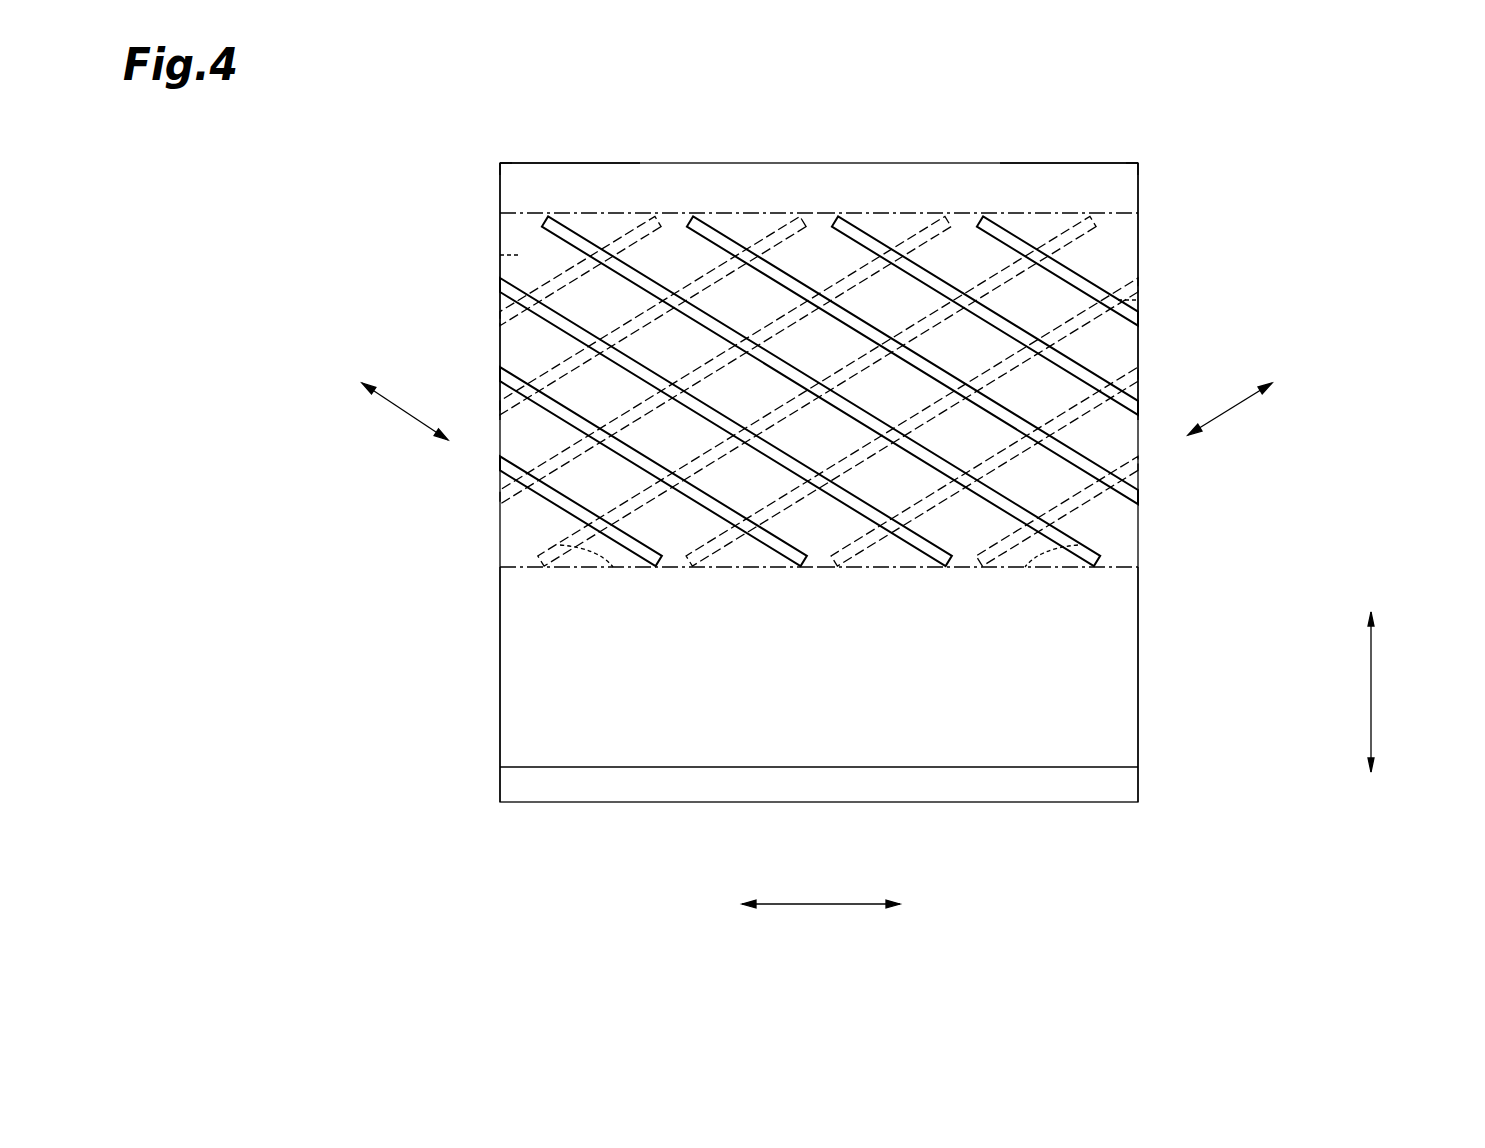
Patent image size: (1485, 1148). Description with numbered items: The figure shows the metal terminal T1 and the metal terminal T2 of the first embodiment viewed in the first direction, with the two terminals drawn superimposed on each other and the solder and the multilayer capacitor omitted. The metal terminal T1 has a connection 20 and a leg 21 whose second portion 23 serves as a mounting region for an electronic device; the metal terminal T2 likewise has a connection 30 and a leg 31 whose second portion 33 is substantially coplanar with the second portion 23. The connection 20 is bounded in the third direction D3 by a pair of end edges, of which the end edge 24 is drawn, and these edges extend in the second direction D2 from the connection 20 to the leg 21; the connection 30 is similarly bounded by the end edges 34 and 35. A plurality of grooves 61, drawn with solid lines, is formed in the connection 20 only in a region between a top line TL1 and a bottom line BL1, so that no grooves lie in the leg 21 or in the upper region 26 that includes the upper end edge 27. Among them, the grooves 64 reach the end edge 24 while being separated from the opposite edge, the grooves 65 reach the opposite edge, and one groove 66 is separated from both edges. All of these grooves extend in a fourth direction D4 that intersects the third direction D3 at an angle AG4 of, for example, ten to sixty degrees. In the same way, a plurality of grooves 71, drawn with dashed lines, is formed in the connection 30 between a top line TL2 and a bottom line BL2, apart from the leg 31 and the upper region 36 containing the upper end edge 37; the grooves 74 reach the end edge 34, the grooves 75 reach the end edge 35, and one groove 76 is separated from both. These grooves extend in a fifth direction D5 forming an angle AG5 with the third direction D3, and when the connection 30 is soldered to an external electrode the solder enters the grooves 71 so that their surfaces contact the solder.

The connection 20 is at (500, 350).
The leg 21 is at (500, 688).
The second portion 23 is at (500, 785).
The end edge 24 is at (500, 250).
The upper region 26 is at (500, 193).
The upper end edge 27 is at (546, 163).
The connection 30 is at (1142, 350).
The leg 31 is at (1142, 680).
The second portion 33 is at (1142, 782).
The end edge 34 is at (1142, 297).
The end edge 35 is at (500, 268).
The upper region 36 is at (1142, 185).
The upper end edge 37 is at (1073, 163).
The plurality of grooves 61 is at (637, 91).
The grooves 64 is at (587, 505).
The grooves 65 is at (855, 318).
The groove 66 is at (805, 485).
The plurality of grooves 71 is at (662, 846).
The grooves 74 is at (867, 460).
The grooves 75 is at (705, 295).
The groove 76 is at (802, 400).
The metal terminal T1 is at (500, 163).
The metal terminal T2 is at (1142, 160).
The top line TL1 is at (583, 213).
The top line TL2 is at (1050, 213).
The bottom line BL1 is at (567, 573).
The bottom line BL2 is at (1065, 572).
The angle AG4 is at (560, 545).
The angle AG5 is at (1078, 545).
The second direction D2 is at (1373, 695).
The third direction D3 is at (805, 906).
The fourth direction D4 is at (415, 422).
The fifth direction D5 is at (1222, 415).